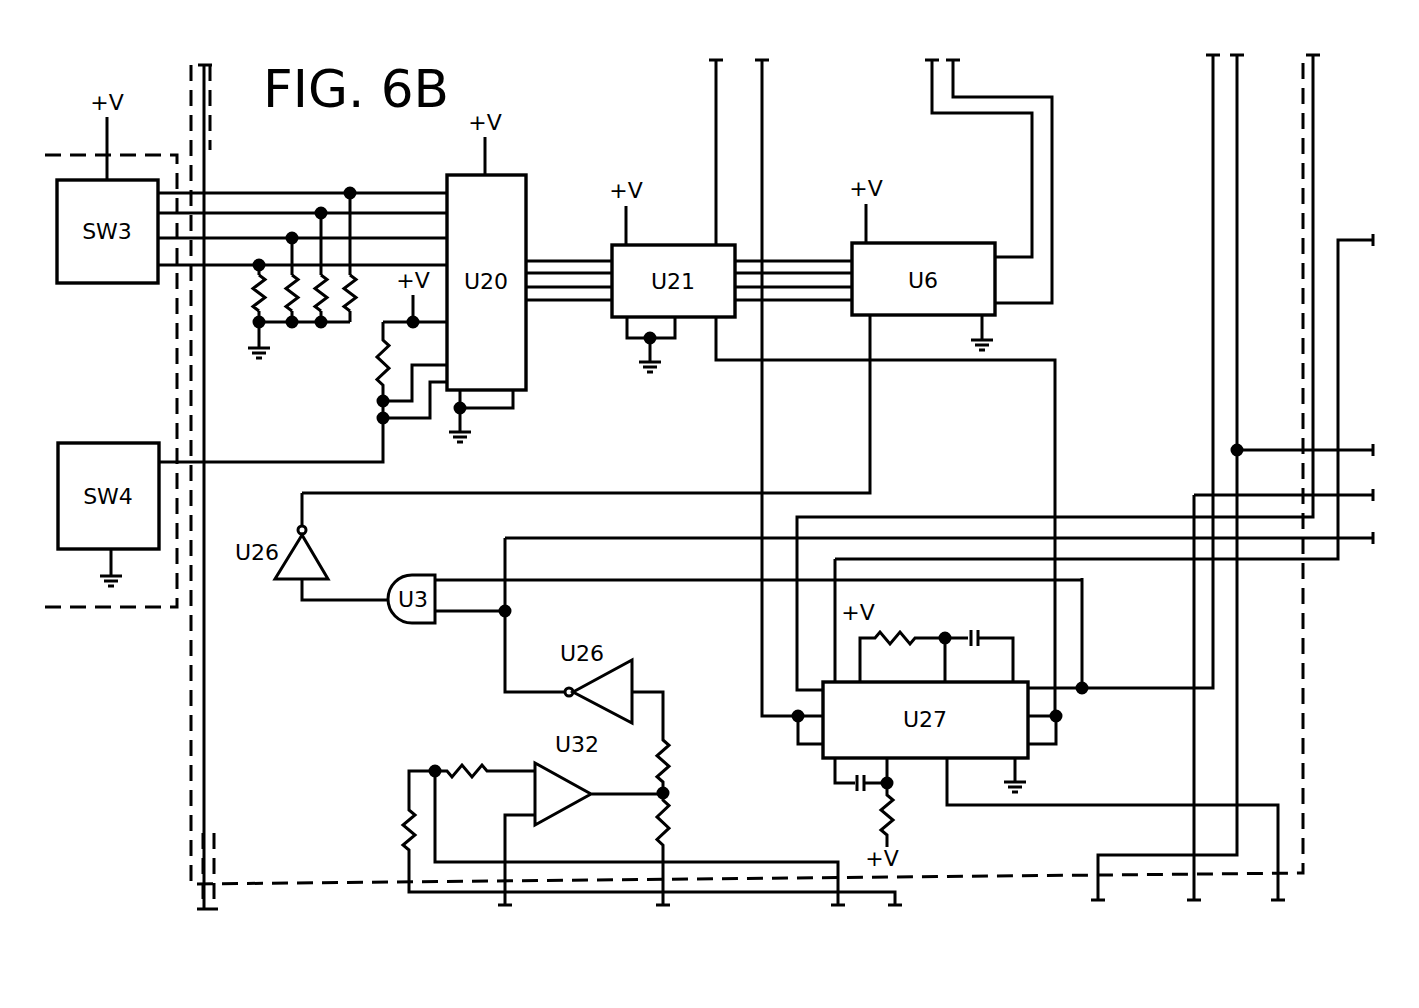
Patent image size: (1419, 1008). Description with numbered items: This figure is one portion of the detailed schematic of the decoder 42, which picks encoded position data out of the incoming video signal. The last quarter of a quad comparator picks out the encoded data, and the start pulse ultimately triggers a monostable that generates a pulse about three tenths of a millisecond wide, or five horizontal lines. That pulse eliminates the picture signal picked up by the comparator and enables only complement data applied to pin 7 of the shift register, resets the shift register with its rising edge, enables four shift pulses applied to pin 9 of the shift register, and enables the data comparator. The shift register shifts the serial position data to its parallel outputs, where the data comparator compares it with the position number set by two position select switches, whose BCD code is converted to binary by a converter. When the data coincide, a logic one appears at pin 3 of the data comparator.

The decoder 42 is at (193, 758).
The pin 3 of U21 3 is at (709, 152).
The pin 7 of U6 7 is at (595, 420).
The pin 9 of U6 9 is at (978, 158).